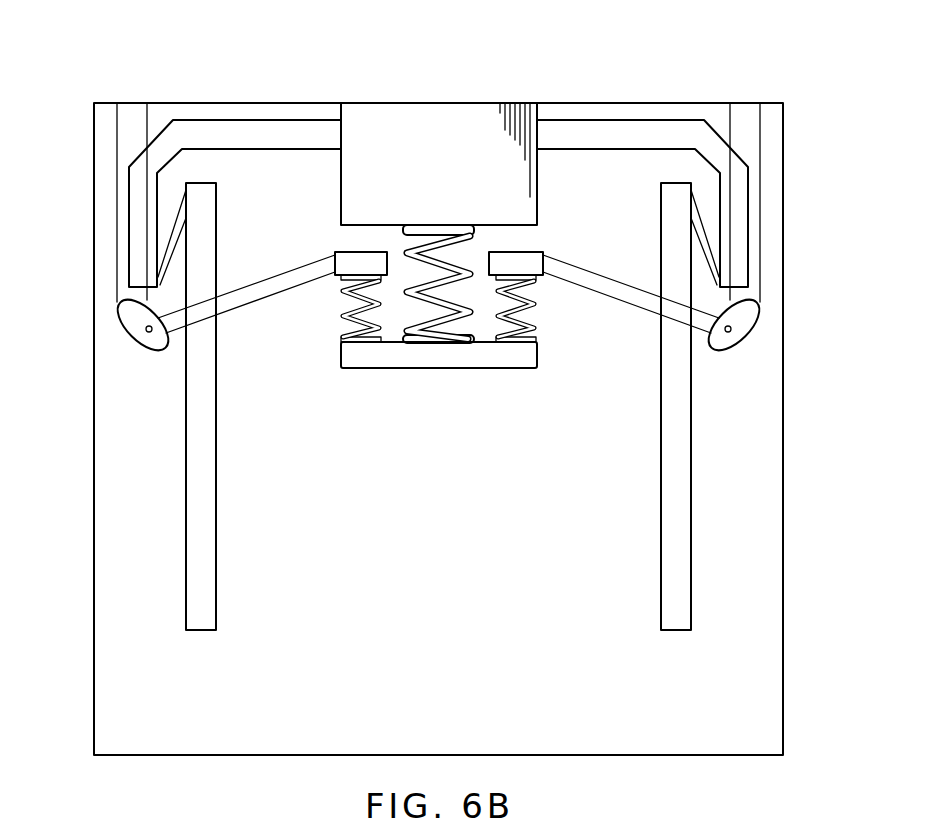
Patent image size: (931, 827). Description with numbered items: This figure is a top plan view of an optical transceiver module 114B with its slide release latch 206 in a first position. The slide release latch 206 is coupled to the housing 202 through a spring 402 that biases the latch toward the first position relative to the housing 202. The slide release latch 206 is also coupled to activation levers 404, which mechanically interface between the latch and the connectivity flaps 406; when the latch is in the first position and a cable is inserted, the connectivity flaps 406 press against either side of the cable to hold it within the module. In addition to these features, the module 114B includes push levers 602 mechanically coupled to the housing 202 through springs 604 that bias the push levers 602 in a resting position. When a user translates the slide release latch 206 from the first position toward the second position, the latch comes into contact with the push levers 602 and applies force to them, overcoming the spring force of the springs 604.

The optical transceiver module 114B is at (140, 84).
The housing 202 is at (243, 102).
The slide release latch 206 is at (338, 180).
The spring 402 is at (482, 315).
The activation levers 404 is at (127, 203).
The connectivity flaps 406 is at (185, 455).
The push levers 602 is at (120, 333).
The springs 604 is at (336, 320).